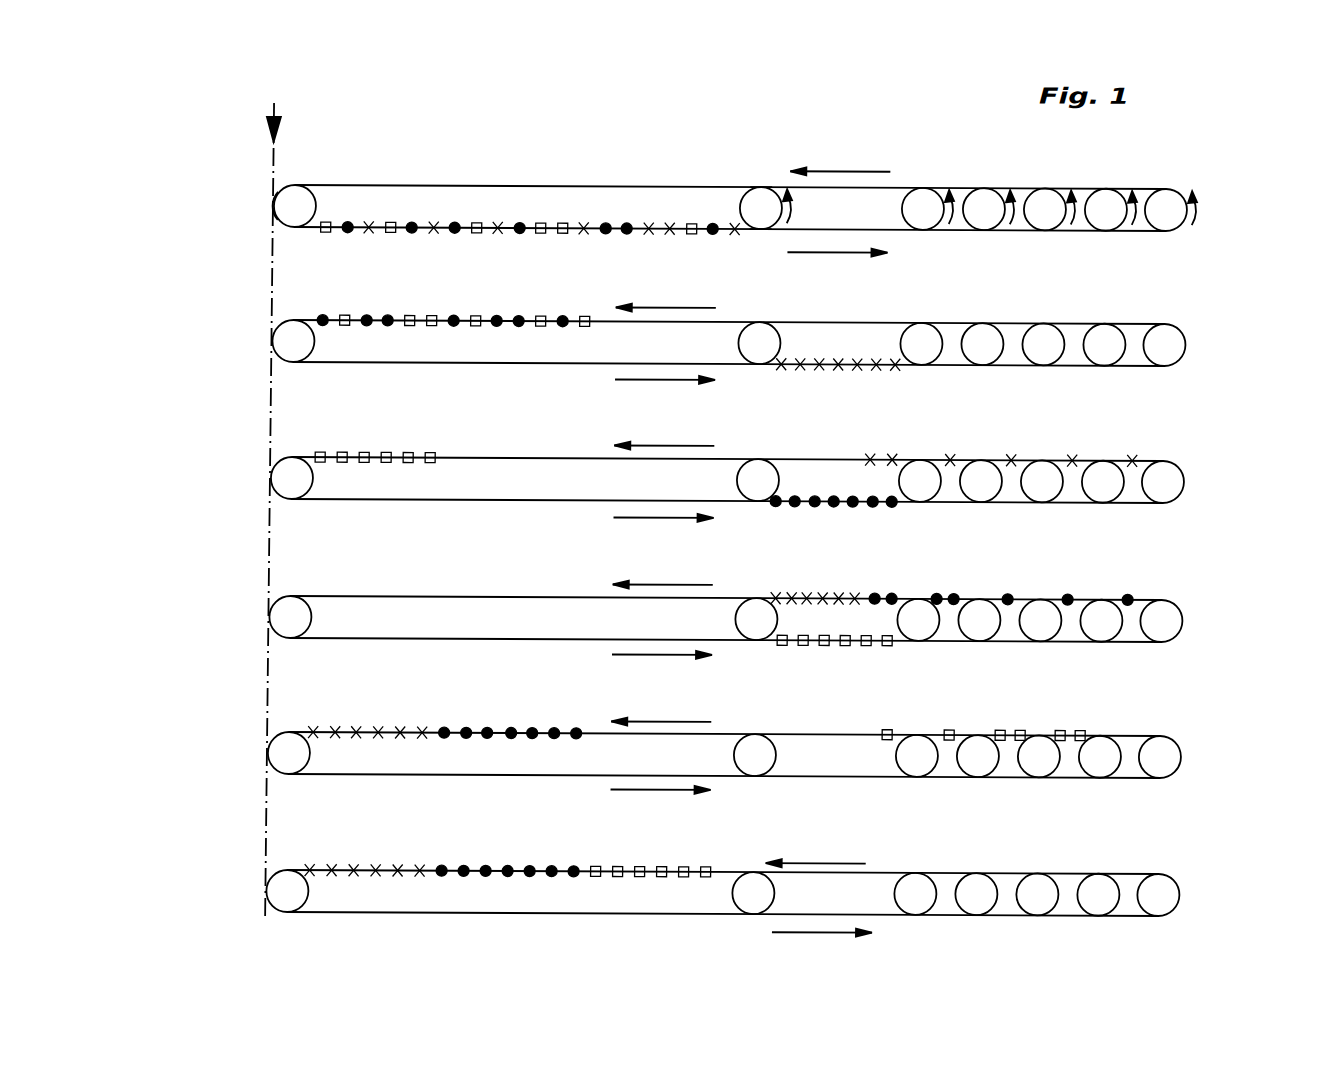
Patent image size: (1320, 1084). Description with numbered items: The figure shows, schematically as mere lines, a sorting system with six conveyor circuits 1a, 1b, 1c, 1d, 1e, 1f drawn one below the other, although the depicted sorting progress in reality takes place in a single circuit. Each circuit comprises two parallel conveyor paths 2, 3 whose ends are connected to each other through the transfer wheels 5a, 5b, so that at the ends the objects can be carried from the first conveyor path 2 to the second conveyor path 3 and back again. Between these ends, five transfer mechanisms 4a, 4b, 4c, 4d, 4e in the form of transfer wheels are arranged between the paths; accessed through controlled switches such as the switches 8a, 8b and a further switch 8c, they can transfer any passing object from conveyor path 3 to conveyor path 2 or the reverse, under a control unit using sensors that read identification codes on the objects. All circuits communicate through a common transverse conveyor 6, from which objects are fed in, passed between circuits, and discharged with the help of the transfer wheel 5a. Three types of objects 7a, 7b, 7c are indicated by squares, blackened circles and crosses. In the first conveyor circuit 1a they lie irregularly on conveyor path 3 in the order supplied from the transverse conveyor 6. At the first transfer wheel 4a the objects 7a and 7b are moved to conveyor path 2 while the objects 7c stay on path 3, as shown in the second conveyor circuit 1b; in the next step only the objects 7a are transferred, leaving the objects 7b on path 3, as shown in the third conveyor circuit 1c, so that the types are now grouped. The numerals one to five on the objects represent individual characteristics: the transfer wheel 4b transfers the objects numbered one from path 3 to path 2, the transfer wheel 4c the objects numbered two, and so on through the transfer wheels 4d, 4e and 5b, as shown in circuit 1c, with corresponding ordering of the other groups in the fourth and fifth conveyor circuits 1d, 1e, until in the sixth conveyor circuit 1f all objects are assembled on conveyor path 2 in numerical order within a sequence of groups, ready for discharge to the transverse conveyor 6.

The first conveyor circuit 1a is at (1204, 212).
The second conveyor circuit 1b is at (1204, 350).
The third conveyor circuit 1c is at (1194, 490).
The fourth conveyor circuit 1d is at (1194, 630).
The fifth conveyor circuit 1e is at (1194, 767).
The sixth conveyor circuit 1f is at (1194, 902).
The first conveyor path 2 is at (572, 185).
The second conveyor path 3 is at (897, 228).
The first transfer wheel 4a is at (750, 207).
The transfer wheel 4b is at (920, 206).
The transfer wheel 4c is at (981, 206).
The transfer wheel 4d is at (1042, 206).
The transfer wheel 4e is at (1103, 206).
The transfer wheel 5a is at (297, 204).
The transfer wheel 5b is at (1163, 198).
The transverse conveyor 6 is at (267, 410).
The objects of the first type 7a is at (326, 222).
The objects of the second type 7b is at (347, 222).
The objects of the third type 7c is at (369, 222).
The switch 8a is at (761, 229).
The switch 8b is at (760, 185).
The belt end position at roller 5a 8c is at (275, 201).